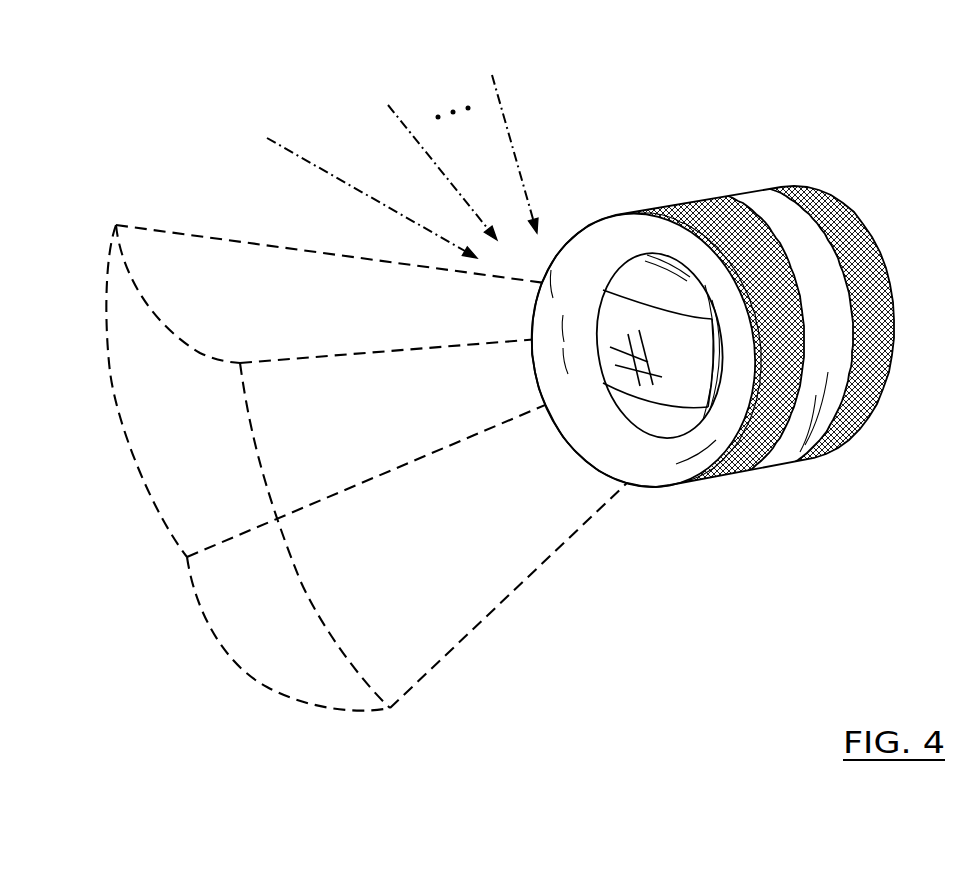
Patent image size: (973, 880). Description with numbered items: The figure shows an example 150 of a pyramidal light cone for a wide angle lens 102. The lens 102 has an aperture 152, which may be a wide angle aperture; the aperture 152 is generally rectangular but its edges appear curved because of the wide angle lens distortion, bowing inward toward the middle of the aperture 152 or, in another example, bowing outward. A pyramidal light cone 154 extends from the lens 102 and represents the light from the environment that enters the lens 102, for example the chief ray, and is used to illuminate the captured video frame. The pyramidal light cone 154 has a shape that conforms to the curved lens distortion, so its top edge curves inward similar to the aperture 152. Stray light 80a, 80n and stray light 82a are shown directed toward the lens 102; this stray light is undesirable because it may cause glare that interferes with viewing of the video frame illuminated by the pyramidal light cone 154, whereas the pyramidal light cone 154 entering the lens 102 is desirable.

The example of a pyramidal light cone for the wide angle lens 150 is at (265, 77).
The pyramidal light cone 154 is at (535, 572).
The stray light 82a is at (328, 174).
The stray light 80a is at (396, 106).
The stray light 80n is at (505, 120).
The wide angle lens 102 is at (633, 258).
The aperture 152 is at (643, 403).